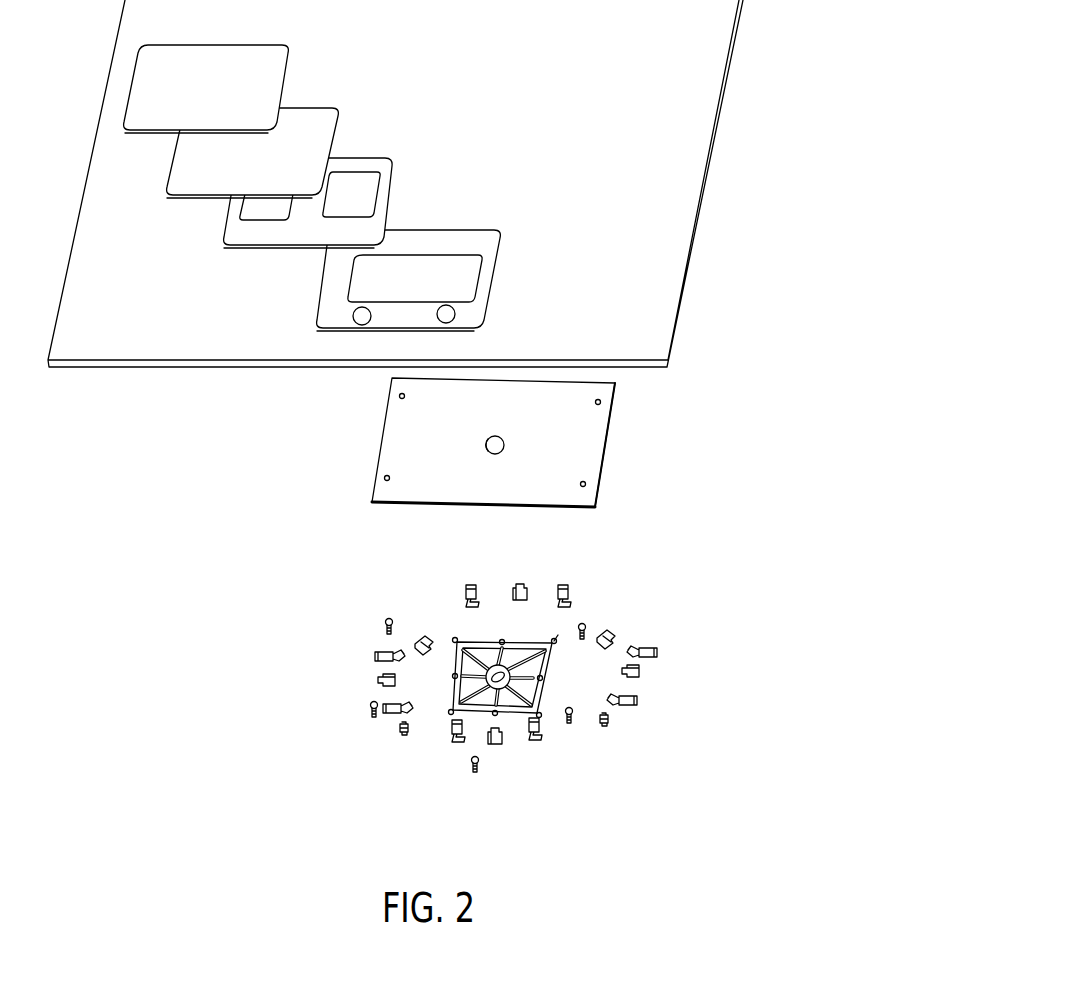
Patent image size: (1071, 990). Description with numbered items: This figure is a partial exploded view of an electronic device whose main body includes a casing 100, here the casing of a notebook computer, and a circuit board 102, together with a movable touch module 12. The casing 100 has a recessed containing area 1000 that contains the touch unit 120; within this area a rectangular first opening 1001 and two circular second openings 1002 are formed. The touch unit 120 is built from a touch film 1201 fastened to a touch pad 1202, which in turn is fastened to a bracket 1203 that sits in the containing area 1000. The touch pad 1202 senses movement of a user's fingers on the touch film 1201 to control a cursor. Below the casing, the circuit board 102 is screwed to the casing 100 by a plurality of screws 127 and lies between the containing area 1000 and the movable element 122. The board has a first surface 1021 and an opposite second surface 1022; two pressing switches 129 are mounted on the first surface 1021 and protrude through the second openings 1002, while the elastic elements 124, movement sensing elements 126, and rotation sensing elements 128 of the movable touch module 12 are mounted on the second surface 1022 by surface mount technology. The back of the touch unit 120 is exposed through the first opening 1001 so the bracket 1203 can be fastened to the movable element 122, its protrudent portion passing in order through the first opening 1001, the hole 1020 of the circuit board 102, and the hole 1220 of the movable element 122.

The casing 100 is at (643, 328).
The touch unit 120 is at (170, 248).
The touch film 1201 is at (145, 86).
The touch pad 1202 is at (182, 175).
The bracket 1203 is at (383, 168).
The containing area 1000 is at (439, 280).
The first opening 1001 is at (462, 278).
The second openings 1002 is at (452, 315).
The circuit board 102 is at (483, 469).
The hole 1020 is at (503, 440).
The first surface 1021 is at (393, 438).
The second surface 1022 is at (443, 533).
The movable touch module 12 is at (281, 690).
The movable element 122 is at (459, 694).
The hole 1220 is at (450, 697).
The elastic elements 124 is at (472, 584).
The movement sensing elements 126 is at (520, 582).
The screws 127 is at (584, 622).
The rotation sensing elements 128 is at (612, 630).
The pressing switches 129 is at (403, 733).